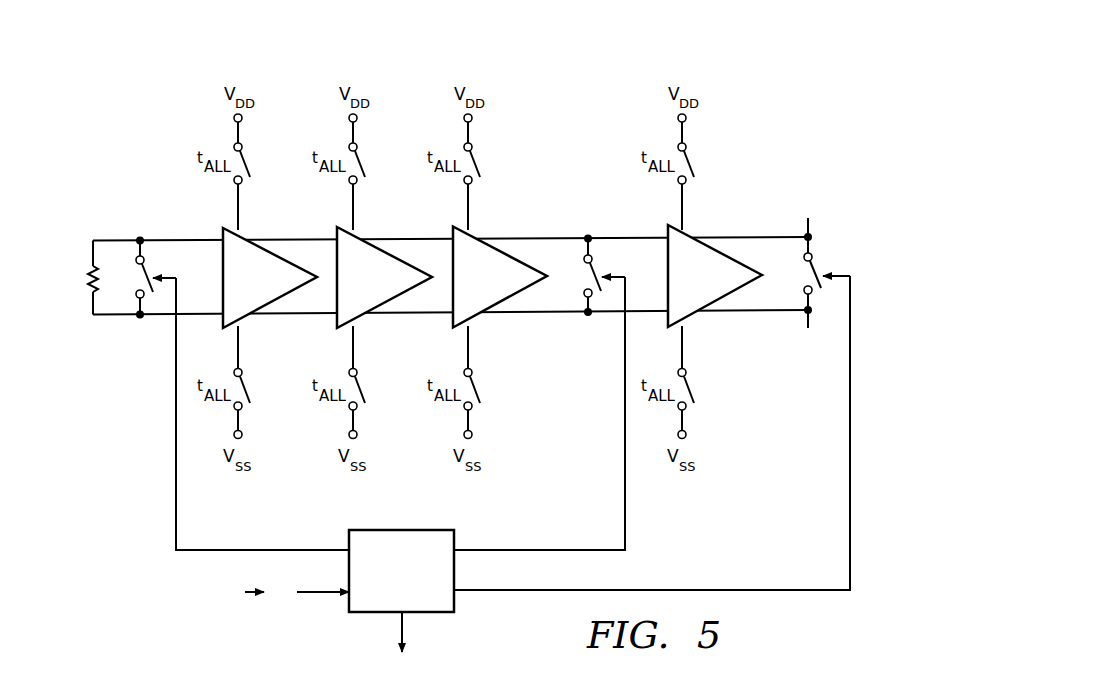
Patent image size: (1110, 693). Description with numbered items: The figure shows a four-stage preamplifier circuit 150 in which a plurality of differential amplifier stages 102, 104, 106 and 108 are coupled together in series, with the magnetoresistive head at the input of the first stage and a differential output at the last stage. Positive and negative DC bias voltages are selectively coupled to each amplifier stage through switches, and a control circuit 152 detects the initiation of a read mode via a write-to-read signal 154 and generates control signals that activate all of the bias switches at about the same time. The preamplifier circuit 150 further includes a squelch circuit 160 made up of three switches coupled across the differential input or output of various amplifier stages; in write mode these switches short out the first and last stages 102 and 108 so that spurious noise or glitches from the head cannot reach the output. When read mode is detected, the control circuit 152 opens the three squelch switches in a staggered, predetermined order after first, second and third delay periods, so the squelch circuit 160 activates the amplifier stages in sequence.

The differential amplifier stage 102 is at (222, 231).
The differential amplifier stage 104 is at (336, 231).
The differential amplifier stage 106 is at (452, 231).
The differential amplifier stage 108 is at (667, 230).
The preamplifier circuit 150 is at (461, 352).
The control circuit 152 is at (400, 529).
The signal 154 is at (318, 596).
The squelch circuit 160 is at (151, 271).